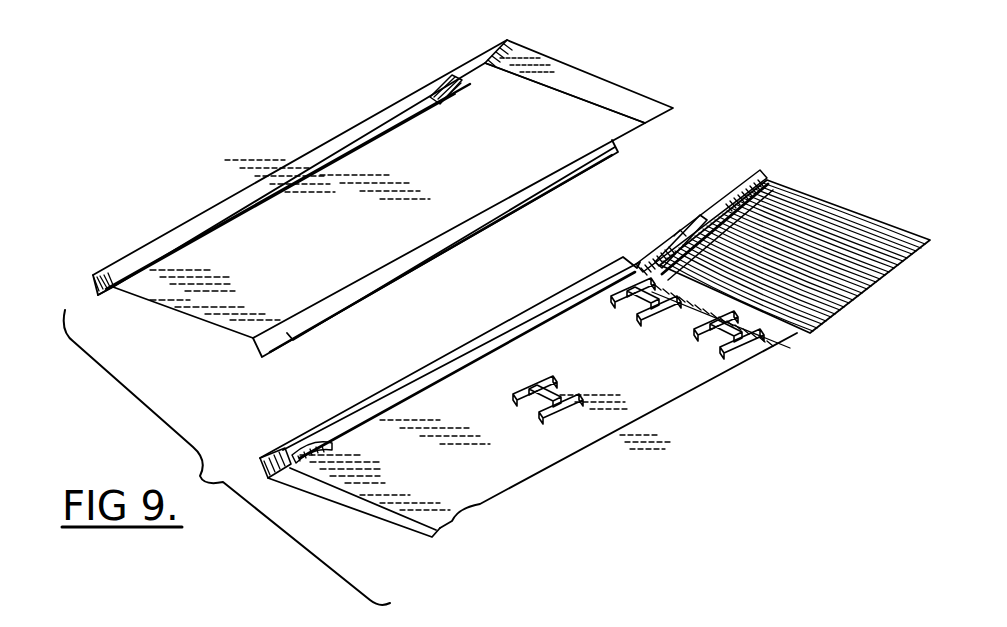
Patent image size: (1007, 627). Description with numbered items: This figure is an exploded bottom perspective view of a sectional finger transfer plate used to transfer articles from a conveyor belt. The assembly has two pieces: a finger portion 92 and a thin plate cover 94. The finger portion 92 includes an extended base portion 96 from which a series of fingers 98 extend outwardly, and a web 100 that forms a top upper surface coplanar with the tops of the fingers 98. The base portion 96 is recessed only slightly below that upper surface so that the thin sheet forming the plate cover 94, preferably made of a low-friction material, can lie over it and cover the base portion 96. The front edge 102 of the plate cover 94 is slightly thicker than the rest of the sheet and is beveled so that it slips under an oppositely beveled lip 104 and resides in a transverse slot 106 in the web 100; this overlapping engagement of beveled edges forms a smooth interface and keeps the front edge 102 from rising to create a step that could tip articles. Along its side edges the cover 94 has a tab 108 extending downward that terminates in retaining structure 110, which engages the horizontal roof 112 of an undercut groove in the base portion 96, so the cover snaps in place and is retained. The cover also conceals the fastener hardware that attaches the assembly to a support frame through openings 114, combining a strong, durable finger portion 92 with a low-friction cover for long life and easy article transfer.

The finger portion 92 is at (327, 470).
The plate cover 94 is at (323, 143).
The base portion 96 is at (528, 463).
The fingers 98 is at (760, 180).
The web 100 is at (693, 207).
The front edge 102 is at (543, 72).
The beveled lip 104 is at (678, 218).
The transverse slot 106 is at (665, 235).
The tab 108 is at (115, 288).
The retaining structure 110 is at (457, 88).
The horizontal roof 112 is at (387, 397).
The openings 114 is at (633, 290).